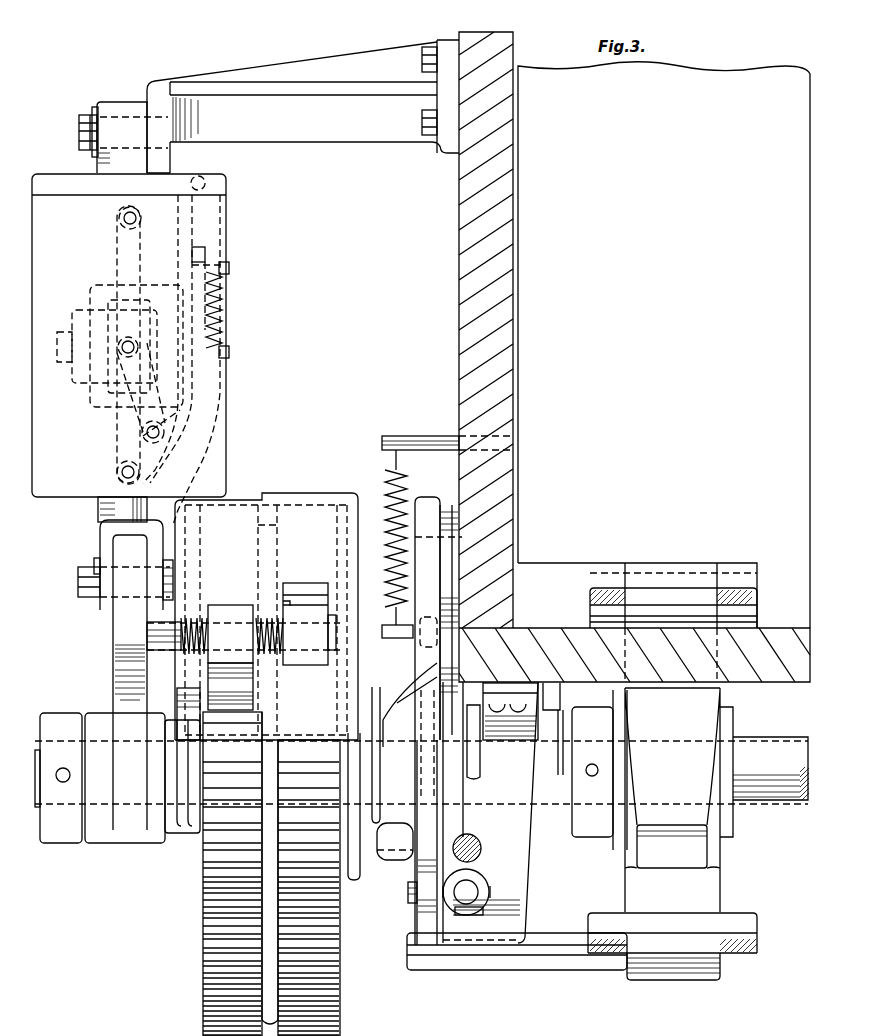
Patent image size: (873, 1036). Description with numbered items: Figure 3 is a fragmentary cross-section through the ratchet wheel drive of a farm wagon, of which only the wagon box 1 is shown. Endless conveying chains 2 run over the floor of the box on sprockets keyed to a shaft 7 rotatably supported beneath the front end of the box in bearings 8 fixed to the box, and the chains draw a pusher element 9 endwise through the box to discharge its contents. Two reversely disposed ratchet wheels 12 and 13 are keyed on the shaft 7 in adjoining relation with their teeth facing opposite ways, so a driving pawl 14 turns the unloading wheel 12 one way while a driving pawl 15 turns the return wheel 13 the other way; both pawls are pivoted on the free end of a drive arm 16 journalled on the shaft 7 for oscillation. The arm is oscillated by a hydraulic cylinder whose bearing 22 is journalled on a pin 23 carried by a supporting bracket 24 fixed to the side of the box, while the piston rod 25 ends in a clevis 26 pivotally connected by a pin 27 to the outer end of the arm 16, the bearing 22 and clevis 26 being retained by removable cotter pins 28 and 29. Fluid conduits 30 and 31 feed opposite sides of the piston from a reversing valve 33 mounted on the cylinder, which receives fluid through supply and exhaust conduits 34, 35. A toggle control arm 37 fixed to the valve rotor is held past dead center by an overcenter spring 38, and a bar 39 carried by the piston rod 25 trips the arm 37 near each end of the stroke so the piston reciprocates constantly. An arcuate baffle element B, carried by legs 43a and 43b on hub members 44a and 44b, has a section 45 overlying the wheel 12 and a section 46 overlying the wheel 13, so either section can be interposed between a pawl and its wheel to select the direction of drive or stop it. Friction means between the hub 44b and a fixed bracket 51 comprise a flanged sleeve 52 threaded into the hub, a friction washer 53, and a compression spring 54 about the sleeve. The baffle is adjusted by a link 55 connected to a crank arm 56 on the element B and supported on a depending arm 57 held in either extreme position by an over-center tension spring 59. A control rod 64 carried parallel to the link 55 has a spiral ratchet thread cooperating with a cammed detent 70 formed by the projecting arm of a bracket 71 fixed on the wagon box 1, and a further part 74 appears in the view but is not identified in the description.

The wagon box 1 is at (512, 290).
The chains 2 is at (588, 602).
The drive shaft 7 is at (768, 795).
The bearings 8 is at (730, 720).
The pusher element 9 is at (664, 371).
The ratchet wheel 12 is at (203, 999).
The ratchet wheel 13 is at (338, 997).
The driving pawl 14 is at (227, 612).
The driving pawl 15 is at (303, 584).
The drive arm 16 is at (113, 674).
The bearing 22 is at (122, 100).
The pin 23 is at (78, 130).
The supporting bracket 24 is at (326, 140).
The piston rod 25 is at (120, 513).
The clevis 26 is at (105, 541).
The pin 27 is at (78, 586).
The cotter pin 28 is at (93, 111).
The cotter pin 29 is at (94, 567).
The fluid conduit 30 is at (117, 241).
The fluid conduit 31 is at (117, 455).
The reversing valve 33 is at (90, 301).
The supply conduit 34 is at (125, 353).
The exhaust conduit 35 is at (141, 434).
The toggle control arm 37 is at (198, 247).
The overcenter spring 38 is at (227, 310).
The bar 39 is at (228, 401).
The leg 43a is at (178, 766).
The leg 43b is at (358, 658).
The hub member 44a is at (170, 783).
The hub member 44b is at (368, 717).
The baffle section 45 is at (266, 620).
The baffle section 46 is at (312, 620).
The fixed bracket 51 is at (442, 668).
The flanged sleeve 52 is at (392, 858).
The friction washer 53 is at (378, 784).
The spring 54 is at (400, 703).
The link 55 is at (478, 840).
The crank arm 56 is at (358, 881).
The depending arm 57 is at (423, 592).
The over-center tension spring 59 is at (402, 462).
The control rod 64 is at (474, 884).
The detent 70 is at (472, 915).
The bracket 71 is at (528, 868).
The bushing 74 is at (485, 888).
The baffle element B is at (305, 485).